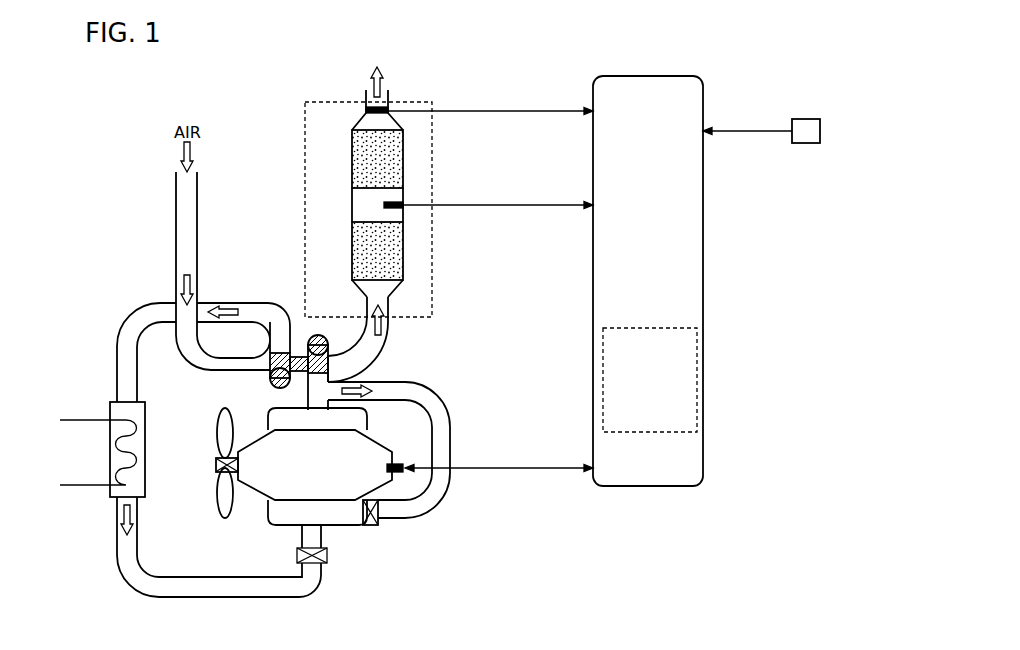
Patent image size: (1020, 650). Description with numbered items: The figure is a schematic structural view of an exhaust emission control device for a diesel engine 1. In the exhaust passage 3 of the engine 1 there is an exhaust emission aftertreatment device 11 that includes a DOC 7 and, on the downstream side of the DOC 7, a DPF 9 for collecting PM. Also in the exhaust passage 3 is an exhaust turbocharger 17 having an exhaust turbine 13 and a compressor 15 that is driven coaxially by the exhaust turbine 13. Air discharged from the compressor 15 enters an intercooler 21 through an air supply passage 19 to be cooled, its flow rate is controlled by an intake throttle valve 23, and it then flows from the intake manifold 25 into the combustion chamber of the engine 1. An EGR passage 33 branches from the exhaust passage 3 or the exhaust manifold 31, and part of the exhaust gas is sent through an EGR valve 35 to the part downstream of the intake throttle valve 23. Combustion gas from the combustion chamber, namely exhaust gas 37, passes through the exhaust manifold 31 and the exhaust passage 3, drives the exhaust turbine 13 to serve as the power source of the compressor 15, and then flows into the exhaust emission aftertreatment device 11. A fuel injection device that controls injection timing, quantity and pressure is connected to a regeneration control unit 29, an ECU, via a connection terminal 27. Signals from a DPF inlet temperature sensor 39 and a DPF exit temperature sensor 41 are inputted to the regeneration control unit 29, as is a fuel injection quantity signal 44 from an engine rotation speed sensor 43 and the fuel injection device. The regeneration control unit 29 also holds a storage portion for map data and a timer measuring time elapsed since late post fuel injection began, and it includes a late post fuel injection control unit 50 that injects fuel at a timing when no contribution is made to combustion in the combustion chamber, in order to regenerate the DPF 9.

The diesel engine 1 is at (455, 596).
The exhaust passage 3 is at (378, 356).
The DOC 7 is at (403, 260).
The DPF 9 is at (403, 162).
The exhaust emission aftertreatment device 11 is at (436, 101).
The exhaust turbine 13 is at (322, 350).
The compressor 15 is at (270, 370).
The exhaust turbocharger 17 is at (296, 344).
The air supply passage 19 is at (133, 316).
The intercooler 21 is at (110, 496).
The intake throttle valve 23 is at (328, 556).
The intake manifold 25 is at (268, 507).
The connection terminal 27 is at (395, 460).
The regeneration control unit 29 is at (645, 76).
The exhaust manifold 31 is at (267, 423).
The EGR passage 33 is at (440, 402).
The EGR valve 35 is at (378, 520).
The exhaust gas 37 is at (389, 330).
The DPF inlet temperature sensor 39 is at (403, 205).
The DPF exit temperature sensor 41 is at (366, 108).
The engine rotation speed sensor 43 is at (805, 145).
The fuel injection quantity signal 44 is at (540, 466).
The late post fuel injection control unit 50 is at (700, 365).